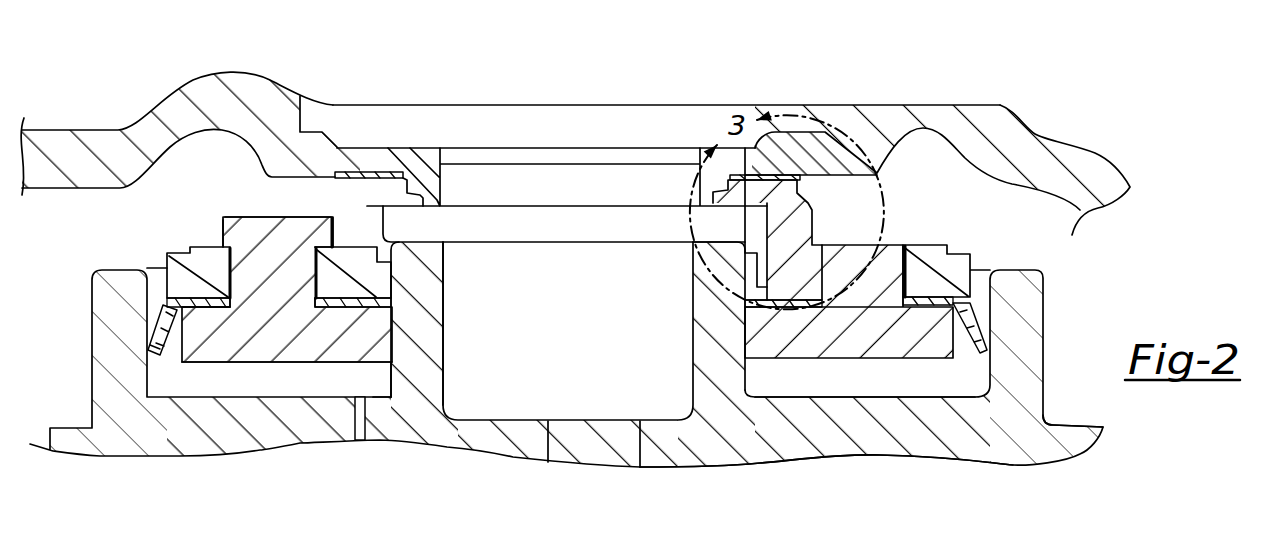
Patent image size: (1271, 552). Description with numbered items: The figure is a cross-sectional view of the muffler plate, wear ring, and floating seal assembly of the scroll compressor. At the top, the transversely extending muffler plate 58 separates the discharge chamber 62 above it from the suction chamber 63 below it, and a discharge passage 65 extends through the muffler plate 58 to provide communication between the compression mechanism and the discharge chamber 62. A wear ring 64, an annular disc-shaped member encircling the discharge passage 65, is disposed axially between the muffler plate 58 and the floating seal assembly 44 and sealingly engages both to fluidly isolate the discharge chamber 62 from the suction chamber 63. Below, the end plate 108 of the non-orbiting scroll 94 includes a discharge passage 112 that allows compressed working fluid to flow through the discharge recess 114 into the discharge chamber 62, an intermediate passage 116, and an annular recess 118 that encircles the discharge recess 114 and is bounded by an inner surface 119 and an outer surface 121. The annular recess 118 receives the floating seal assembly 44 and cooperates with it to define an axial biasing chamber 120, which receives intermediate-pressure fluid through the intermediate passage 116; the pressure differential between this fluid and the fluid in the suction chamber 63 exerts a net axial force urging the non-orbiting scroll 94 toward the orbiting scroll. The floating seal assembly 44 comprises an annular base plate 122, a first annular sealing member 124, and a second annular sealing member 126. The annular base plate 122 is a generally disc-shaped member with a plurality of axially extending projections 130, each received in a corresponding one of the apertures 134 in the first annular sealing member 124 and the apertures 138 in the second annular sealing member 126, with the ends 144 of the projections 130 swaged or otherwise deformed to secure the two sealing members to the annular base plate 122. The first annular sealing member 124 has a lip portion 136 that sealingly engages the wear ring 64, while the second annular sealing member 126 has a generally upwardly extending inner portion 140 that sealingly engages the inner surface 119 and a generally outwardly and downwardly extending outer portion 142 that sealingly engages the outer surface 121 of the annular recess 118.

The floating seal assembly 44 is at (228, 216).
The muffler plate 58 is at (208, 70).
The discharge chamber 62 is at (641, 92).
The suction chamber 63 is at (1023, 226).
The wear ring 64 is at (800, 182).
The discharge passage 65 is at (440, 185).
The non-orbiting scroll 94 is at (1055, 338).
The end plate 108 is at (1058, 432).
The discharge passage 112 is at (640, 447).
The discharge recess 114 is at (693, 317).
The intermediate passage 116 is at (352, 423).
The annular recess 118 is at (873, 398).
The inner surface 119 is at (375, 376).
The axial biasing chamber 120 is at (843, 382).
The outer surface 121 is at (147, 366).
The annular base plate 122 is at (259, 362).
The first annular sealing member 124 is at (788, 231).
The second annular sealing member 126 is at (167, 327).
The axially extending projections 130 is at (278, 237).
The apertures 134 is at (232, 277).
The lip portion 136 is at (368, 181).
The apertures 138 is at (263, 353).
The inner portion 140 is at (390, 267).
The outer portion 142 is at (147, 338).
The ends 144 is at (222, 234).